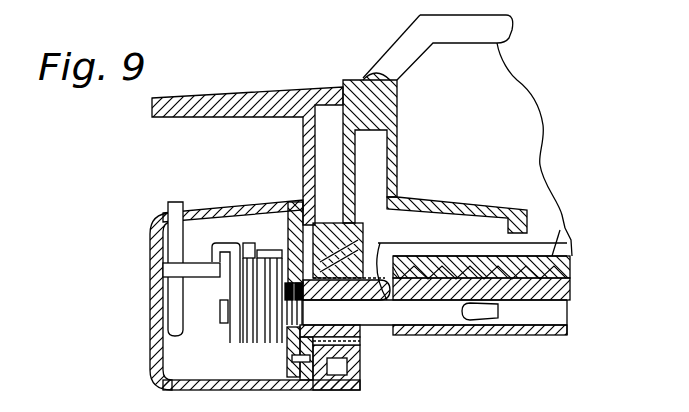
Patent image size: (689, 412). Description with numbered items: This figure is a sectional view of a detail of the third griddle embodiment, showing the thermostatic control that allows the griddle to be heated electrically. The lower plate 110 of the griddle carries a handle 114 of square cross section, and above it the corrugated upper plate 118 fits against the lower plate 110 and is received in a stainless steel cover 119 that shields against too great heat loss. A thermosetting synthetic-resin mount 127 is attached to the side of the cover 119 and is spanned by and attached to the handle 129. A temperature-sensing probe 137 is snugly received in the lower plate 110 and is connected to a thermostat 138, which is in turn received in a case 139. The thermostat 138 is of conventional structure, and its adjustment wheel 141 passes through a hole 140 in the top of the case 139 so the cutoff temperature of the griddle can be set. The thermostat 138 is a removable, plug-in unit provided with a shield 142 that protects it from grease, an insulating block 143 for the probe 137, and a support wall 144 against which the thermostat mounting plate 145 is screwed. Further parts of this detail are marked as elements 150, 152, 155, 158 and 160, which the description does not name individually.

The lower plate 110 is at (548, 302).
The handle 114 is at (215, 106).
The upper plate 118 is at (560, 230).
The cover 119 is at (503, 228).
The mount 127 is at (352, 109).
The handle 129 is at (457, 34).
The temperature-sensing probe 137 is at (462, 321).
The thermostat 138 is at (253, 322).
The case 139 is at (163, 382).
The hole 140 is at (183, 203).
The adjustment wheel 141 is at (173, 240).
The shield 142 is at (378, 245).
The insulating block 143 is at (380, 338).
The support wall 144 is at (327, 368).
The thermostat mounting plate 145 is at (282, 345).
The member 150 is at (488, 406).
The member 152 is at (209, 406).
The member 155 is at (397, 404).
The member 158 is at (340, 405).
The member 160 is at (295, 406).